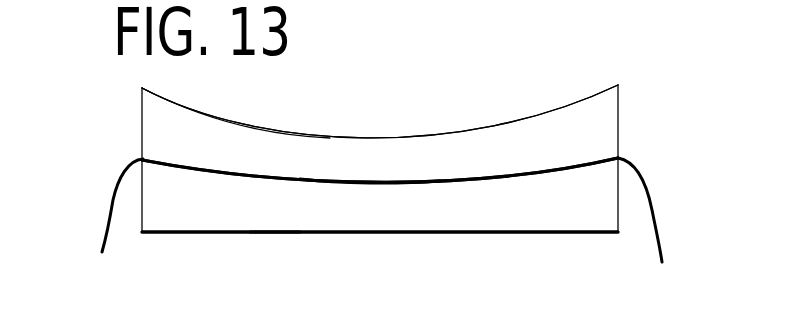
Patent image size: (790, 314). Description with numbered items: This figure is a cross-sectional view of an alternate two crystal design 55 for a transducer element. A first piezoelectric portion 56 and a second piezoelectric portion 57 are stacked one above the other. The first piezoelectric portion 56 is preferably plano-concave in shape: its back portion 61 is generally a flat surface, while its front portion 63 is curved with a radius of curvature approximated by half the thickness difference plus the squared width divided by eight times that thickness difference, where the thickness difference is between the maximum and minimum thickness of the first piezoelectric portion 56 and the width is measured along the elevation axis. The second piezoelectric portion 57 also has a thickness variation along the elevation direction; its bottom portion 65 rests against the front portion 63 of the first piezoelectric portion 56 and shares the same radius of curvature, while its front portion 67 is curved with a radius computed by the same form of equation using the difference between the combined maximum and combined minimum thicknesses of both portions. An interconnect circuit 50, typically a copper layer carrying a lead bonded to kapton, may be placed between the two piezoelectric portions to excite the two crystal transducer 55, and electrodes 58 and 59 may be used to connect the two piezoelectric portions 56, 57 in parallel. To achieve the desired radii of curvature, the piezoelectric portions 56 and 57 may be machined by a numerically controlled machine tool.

The interconnect circuit 50 is at (655, 220).
The two crystal design 55 is at (114, 127).
The first piezoelectric portion 56 is at (481, 202).
The second piezoelectric portion 57 is at (435, 156).
The electrode 58 is at (300, 235).
The electrode 59 is at (276, 127).
The back portion 61 is at (207, 231).
The front portion 63 is at (335, 184).
The bottom portion 65 is at (287, 178).
The front portion 67 is at (193, 112).